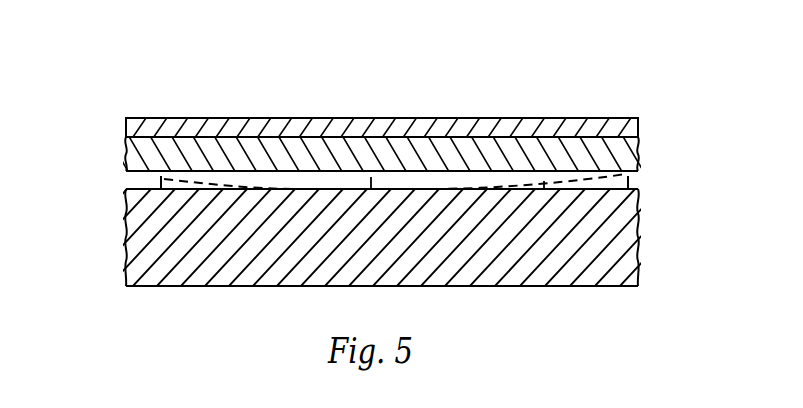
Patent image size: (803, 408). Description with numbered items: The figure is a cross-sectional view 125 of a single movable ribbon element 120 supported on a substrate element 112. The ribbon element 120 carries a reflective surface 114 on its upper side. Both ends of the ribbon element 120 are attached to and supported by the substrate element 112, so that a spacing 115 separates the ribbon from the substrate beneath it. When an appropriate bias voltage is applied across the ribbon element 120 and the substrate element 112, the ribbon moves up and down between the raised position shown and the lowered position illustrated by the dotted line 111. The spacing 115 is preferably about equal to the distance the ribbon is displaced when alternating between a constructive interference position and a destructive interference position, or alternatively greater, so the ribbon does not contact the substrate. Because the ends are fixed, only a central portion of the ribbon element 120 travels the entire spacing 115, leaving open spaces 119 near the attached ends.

The cross-sectional view 125 is at (121, 76).
The reflective surface 114 is at (585, 118).
The movable ribbon element 120 is at (642, 145).
The spacing 115 is at (364, 182).
The open spaces 119 is at (152, 179).
The substrate element 112 is at (633, 245).
The dotted line 111 is at (544, 189).